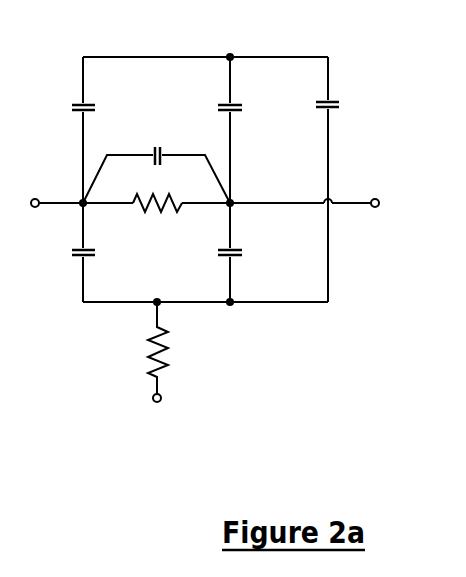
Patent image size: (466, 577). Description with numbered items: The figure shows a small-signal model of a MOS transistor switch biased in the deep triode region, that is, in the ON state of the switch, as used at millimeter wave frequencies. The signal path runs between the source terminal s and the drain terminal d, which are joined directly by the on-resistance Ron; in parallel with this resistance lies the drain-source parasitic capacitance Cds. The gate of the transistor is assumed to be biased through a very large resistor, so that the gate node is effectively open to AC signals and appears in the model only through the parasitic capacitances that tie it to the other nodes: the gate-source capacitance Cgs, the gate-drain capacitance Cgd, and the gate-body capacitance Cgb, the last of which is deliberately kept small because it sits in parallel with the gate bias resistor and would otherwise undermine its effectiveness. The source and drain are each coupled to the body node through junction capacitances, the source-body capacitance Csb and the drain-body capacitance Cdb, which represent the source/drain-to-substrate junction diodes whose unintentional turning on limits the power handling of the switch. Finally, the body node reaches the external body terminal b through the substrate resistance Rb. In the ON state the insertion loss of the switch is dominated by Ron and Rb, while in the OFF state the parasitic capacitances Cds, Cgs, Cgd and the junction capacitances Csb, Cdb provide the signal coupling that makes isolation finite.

The gate-source parasitic capacitance Cgs is at (60, 108).
The gate-drain parasitic capacitance Cgd is at (255, 109).
The gate-body parasitic capacitance Cgb is at (353, 109).
The drain-body junction capacitance Cdb is at (60, 256).
The source-body junction capacitance Csb is at (255, 256).
The drain-source parasitic capacitance Cds is at (156, 155).
The on-resistance Ron is at (157, 223).
The substrate resistance Rb is at (179, 348).
The source terminal s is at (23, 203).
The drain terminal d is at (390, 202).
The body terminal b is at (157, 416).